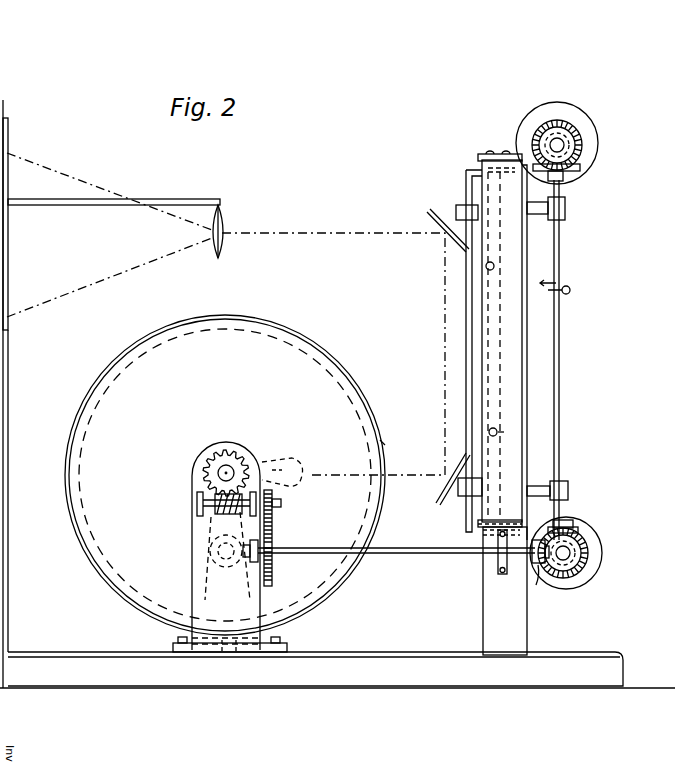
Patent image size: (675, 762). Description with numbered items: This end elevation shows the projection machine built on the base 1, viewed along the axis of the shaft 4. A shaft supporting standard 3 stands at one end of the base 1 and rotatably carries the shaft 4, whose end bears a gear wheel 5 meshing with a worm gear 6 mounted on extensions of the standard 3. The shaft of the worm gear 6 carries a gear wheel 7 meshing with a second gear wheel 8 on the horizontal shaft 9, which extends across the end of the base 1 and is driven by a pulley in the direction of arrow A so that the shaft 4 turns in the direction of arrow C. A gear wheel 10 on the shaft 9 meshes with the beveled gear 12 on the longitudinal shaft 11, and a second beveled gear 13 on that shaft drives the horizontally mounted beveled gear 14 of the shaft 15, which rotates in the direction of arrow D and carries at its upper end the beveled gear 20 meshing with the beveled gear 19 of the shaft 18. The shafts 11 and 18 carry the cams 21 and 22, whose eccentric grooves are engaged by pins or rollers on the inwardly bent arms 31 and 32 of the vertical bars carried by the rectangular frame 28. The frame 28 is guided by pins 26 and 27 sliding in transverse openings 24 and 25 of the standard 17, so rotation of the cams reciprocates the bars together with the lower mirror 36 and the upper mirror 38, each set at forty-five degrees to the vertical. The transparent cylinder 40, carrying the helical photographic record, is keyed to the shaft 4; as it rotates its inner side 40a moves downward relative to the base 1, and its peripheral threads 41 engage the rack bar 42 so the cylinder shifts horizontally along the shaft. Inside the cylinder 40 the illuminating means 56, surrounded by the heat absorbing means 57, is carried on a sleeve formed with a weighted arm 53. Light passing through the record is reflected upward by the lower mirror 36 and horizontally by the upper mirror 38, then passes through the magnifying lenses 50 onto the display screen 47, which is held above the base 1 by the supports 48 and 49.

The base 1 is at (432, 680).
The shaft supporting standard 3 is at (230, 547).
The shaft 4 is at (229, 470).
The gear wheel 5 is at (209, 467).
The worm gear 6 is at (218, 507).
The gear wheel 7 is at (282, 509).
The second gear wheel 8 is at (273, 572).
The horizontal shaft 9 is at (426, 549).
The beveled gear wheel 10 is at (540, 588).
The shaft 11 is at (606, 557).
The beveled gear 12 is at (578, 586).
The second beveled gear 13 is at (590, 548).
The beveled gear 14 is at (584, 534).
The shaft 15 is at (562, 467).
The standard 17 is at (512, 358).
The shaft 18 is at (580, 143).
The beveled gear 19 is at (562, 137).
The beveled gear 20 is at (585, 168).
The cam 21 is at (596, 575).
The cam 22 is at (597, 150).
The transverse opening 24 is at (482, 276).
The transverse opening 25 is at (498, 431).
The pin 26 is at (495, 266).
The pin 27 is at (489, 433).
The frame 28 is at (495, 400).
The inwardly bent arm 31 is at (484, 540).
The inwardly bent arm 32 is at (478, 160).
The lower mirror 36 is at (437, 503).
The upper mirror 38 is at (430, 212).
The transparent cylinder 40 is at (289, 347).
The inner side of cylinder 40a is at (392, 446).
The peripheral threads 41 is at (108, 588).
The rack bar 42 is at (232, 648).
The display screen 47 is at (10, 277).
The support 48 is at (10, 436).
The support 49 is at (200, 206).
The magnifying lenses 50 is at (223, 242).
The weighted arm 53 is at (214, 553).
The illuminating means 56 is at (296, 470).
The heat absorbing means 57 is at (270, 462).
The arrow A is at (388, 540).
The arrow C is at (366, 376).
The arrow D is at (571, 291).